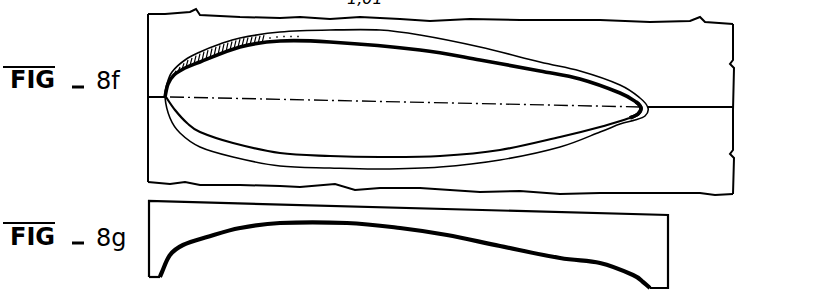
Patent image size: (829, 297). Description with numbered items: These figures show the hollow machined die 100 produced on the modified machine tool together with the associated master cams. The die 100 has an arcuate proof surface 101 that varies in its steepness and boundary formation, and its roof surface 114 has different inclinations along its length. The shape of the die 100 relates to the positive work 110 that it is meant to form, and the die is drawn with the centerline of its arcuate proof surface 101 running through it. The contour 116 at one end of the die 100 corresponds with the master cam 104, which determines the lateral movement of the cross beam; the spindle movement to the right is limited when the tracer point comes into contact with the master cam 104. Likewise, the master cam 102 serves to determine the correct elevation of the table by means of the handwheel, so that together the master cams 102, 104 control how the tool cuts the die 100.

In FIG. 8F, the die 100 is at (694, 38).
In FIG. 8F, the arcuate proof surface 101 is at (560, 100).
In FIG. 8F, the positive work 110 is at (253, 133).
In FIG. 8F, the roof surface 114 is at (521, 44).
In FIG. 8F, the contour 116 is at (648, 77).
In FIG. 8G, the master cam 102 is at (408, 249).
In FIG. 8G, the master cam 104 is at (575, 247).